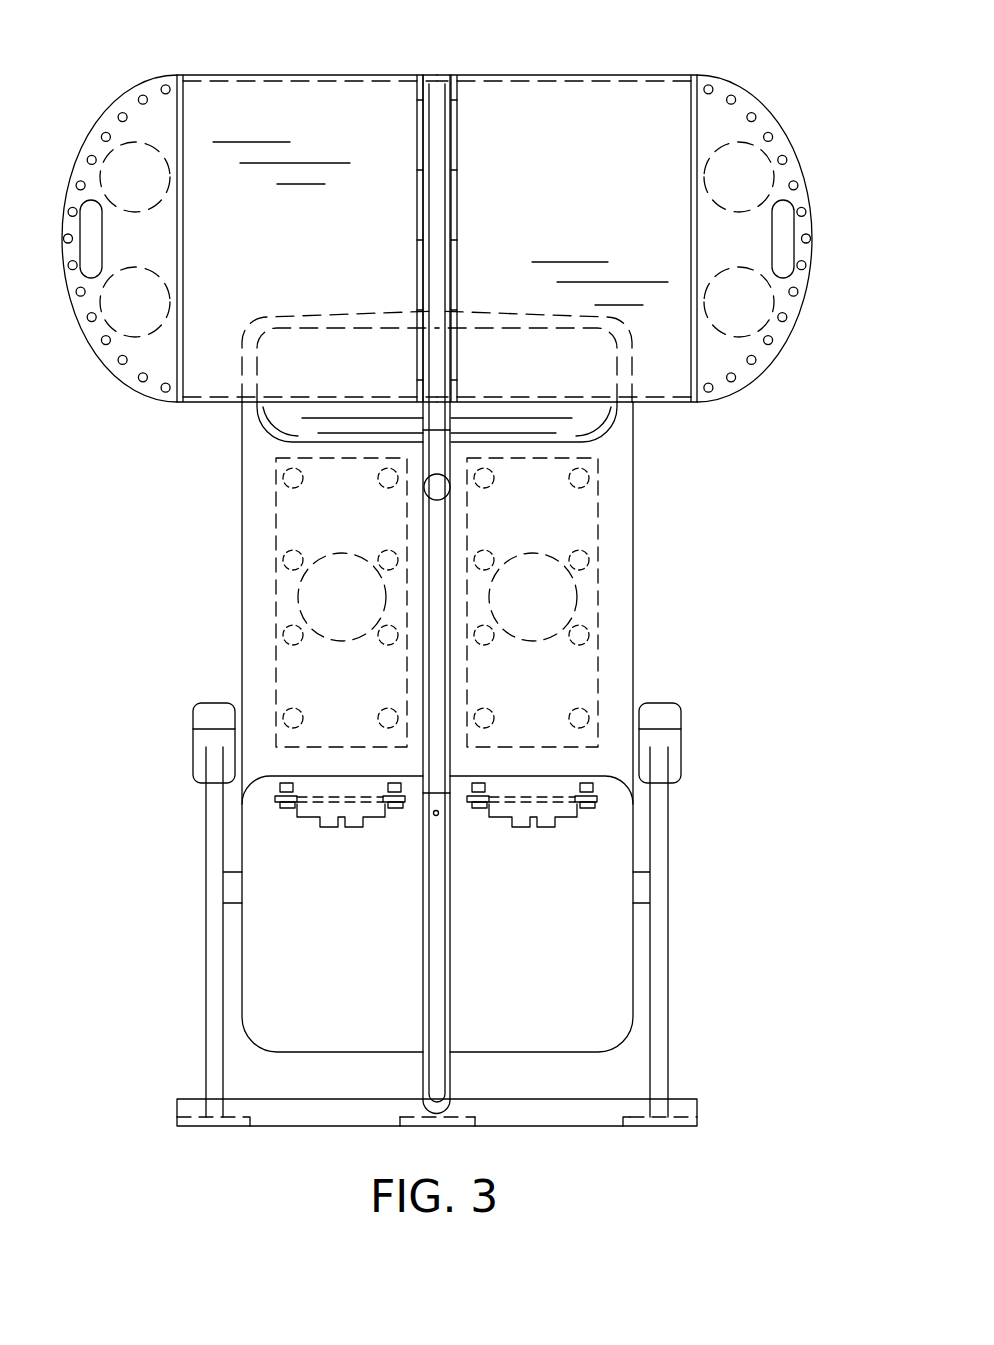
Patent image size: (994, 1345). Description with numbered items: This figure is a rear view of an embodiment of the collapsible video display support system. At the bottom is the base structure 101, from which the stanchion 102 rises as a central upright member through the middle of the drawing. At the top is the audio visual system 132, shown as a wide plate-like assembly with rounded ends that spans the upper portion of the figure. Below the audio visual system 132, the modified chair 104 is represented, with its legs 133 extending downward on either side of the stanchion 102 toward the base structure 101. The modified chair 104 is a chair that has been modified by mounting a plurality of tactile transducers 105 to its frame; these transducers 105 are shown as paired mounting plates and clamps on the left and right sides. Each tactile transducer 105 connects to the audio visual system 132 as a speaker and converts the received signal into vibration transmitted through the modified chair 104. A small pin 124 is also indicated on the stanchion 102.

The base structure 101 is at (560, 1112).
The stanchion 102 is at (453, 990).
The modified chair 104 is at (667, 802).
The tactile transducers 105 is at (300, 660).
The pin 124 is at (437, 815).
The audio visual system 132 is at (567, 138).
The legs 133 is at (205, 1050).